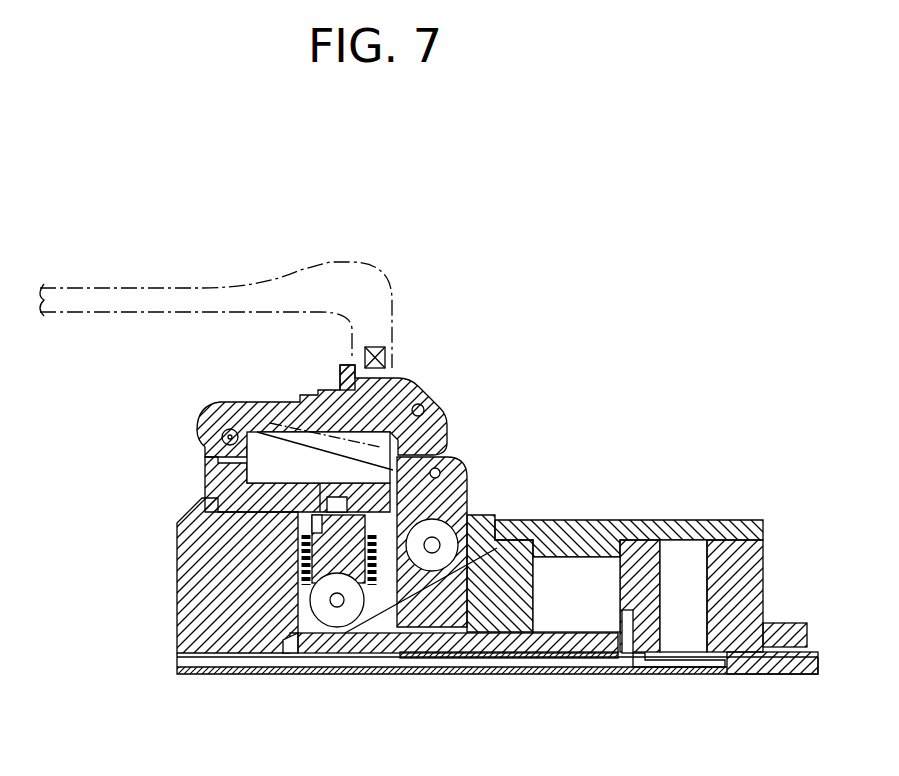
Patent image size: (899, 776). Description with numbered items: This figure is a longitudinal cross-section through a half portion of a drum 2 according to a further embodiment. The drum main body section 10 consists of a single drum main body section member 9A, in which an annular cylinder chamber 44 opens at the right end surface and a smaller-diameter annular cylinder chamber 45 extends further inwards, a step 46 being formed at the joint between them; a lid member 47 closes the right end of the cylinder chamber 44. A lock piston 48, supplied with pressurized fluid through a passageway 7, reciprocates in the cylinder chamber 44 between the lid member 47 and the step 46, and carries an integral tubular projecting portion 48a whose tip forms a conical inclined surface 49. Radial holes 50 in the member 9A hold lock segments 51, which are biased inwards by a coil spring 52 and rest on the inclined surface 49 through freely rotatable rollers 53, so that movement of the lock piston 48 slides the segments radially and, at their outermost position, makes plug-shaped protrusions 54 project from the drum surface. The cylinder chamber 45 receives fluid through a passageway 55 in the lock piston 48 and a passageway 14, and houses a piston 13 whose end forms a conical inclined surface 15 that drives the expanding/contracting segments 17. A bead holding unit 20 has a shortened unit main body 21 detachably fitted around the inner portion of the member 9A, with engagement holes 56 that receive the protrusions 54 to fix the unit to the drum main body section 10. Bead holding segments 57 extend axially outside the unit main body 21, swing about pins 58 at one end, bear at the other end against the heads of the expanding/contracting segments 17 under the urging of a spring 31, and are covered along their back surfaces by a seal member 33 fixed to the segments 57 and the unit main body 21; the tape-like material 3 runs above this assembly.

The drum 2 is at (561, 485).
The tape (ribbon) 3 is at (262, 272).
The passageway 7 is at (727, 665).
The drum main body section member 9A is at (235, 635).
The drum main body section 10 is at (160, 576).
The piston 13 is at (500, 560).
The passageway 14 is at (497, 660).
The conical inclined surface 15 is at (405, 630).
The expanding/contracting segments 17 is at (455, 460).
The bead holding unit 20 is at (240, 390).
The unit main body 21 is at (217, 496).
The spring 31 is at (425, 408).
The seal member 33 is at (283, 403).
The annular cylinder chamber 44 is at (690, 634).
The annular cylinder chamber 45 is at (582, 614).
The step 46 is at (600, 520).
The lid member 47 is at (760, 590).
The lock piston 48 is at (643, 670).
The tubular projecting portion 48a is at (445, 652).
The conical inclined surface 49 is at (285, 640).
The radial holes 50 is at (300, 580).
The lock segments 51 is at (302, 552).
The coil spring 52 is at (380, 635).
The rollers 53 is at (340, 620).
The plug-shaped protrusions 54 is at (345, 487).
The passageway 55 is at (627, 642).
The engagement holes 56 is at (418, 526).
The bead holding segments 57 is at (406, 392).
The pins 58 is at (222, 432).